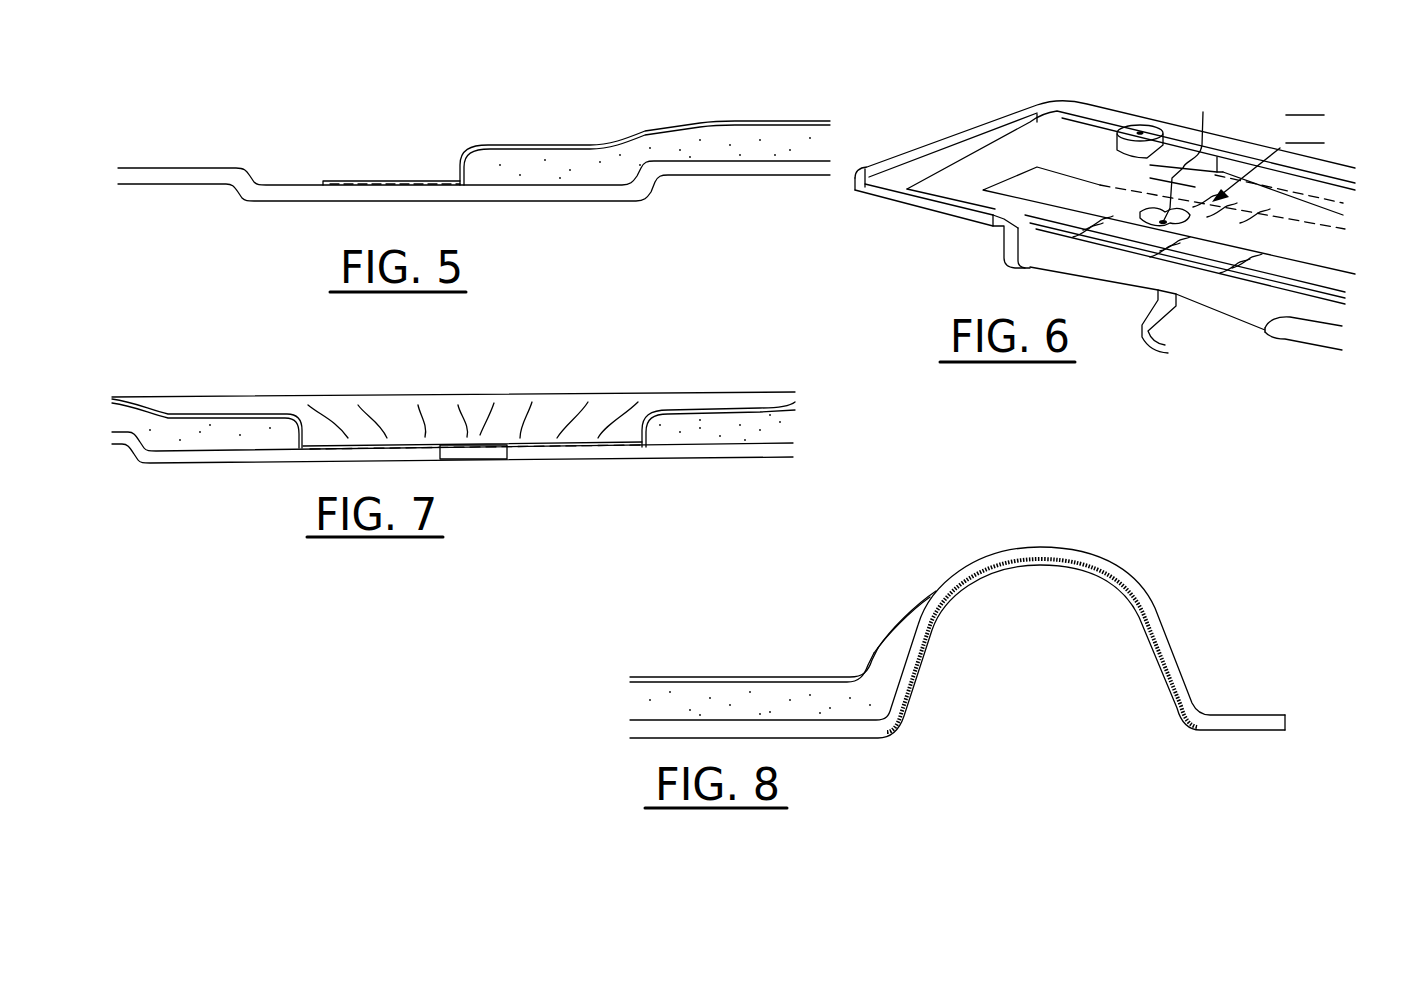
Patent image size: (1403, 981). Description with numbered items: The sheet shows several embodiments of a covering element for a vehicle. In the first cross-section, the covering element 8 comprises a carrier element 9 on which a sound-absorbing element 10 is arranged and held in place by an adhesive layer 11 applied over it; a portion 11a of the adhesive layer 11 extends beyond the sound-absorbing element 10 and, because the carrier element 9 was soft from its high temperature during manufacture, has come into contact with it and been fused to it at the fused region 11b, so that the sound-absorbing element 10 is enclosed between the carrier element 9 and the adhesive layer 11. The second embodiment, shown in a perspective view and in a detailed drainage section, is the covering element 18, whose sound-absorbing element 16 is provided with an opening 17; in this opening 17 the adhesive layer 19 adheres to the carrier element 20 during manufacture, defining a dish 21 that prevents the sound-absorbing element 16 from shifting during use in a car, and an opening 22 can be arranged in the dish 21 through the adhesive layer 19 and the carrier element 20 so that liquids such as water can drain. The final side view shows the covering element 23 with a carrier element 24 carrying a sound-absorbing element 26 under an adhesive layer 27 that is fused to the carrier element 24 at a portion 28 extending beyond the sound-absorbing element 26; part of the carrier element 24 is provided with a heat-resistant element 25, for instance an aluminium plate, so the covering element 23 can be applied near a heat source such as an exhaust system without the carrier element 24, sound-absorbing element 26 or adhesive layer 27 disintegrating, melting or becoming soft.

In FIG. 5, the covering element 8 is at (306, 113).
In FIG. 5, the carrier element 9 is at (530, 203).
In FIG. 5, the sound-absorbing element 10 is at (766, 146).
In FIG. 5, the adhesive layer 11 is at (727, 124).
In FIG. 5, the portion of adhesive layer 11a is at (396, 182).
In FIG. 5, the fused portion 11b is at (349, 190).
In FIG. 7, the sound-absorbing element 16 is at (718, 440).
In FIG. 6, the opening 17 is at (1175, 158).
In FIG. 6, the covering element 18 is at (1161, 72).
In FIG. 6, the adhesive layer 19 is at (1027, 275).
In FIG. 7, the adhesive layer 19 is at (797, 409).
In FIG. 7, the carrier element 20 is at (680, 452).
In FIG. 6, the dish 21 is at (1137, 189).
In FIG. 7, the dish 21 is at (547, 410).
In FIG. 6, the opening 22 is at (1183, 224).
In FIG. 7, the opening 22 is at (473, 460).
In FIG. 8, the covering element 23 is at (1210, 578).
In FIG. 8, the carrier element 24 is at (1230, 723).
In FIG. 8, the heat-resistant element 25 is at (920, 663).
In FIG. 8, the sound-absorbing element 26 is at (640, 710).
In FIG. 8, the adhesive layer 27 is at (810, 678).
In FIG. 8, the portion 28 is at (940, 594).